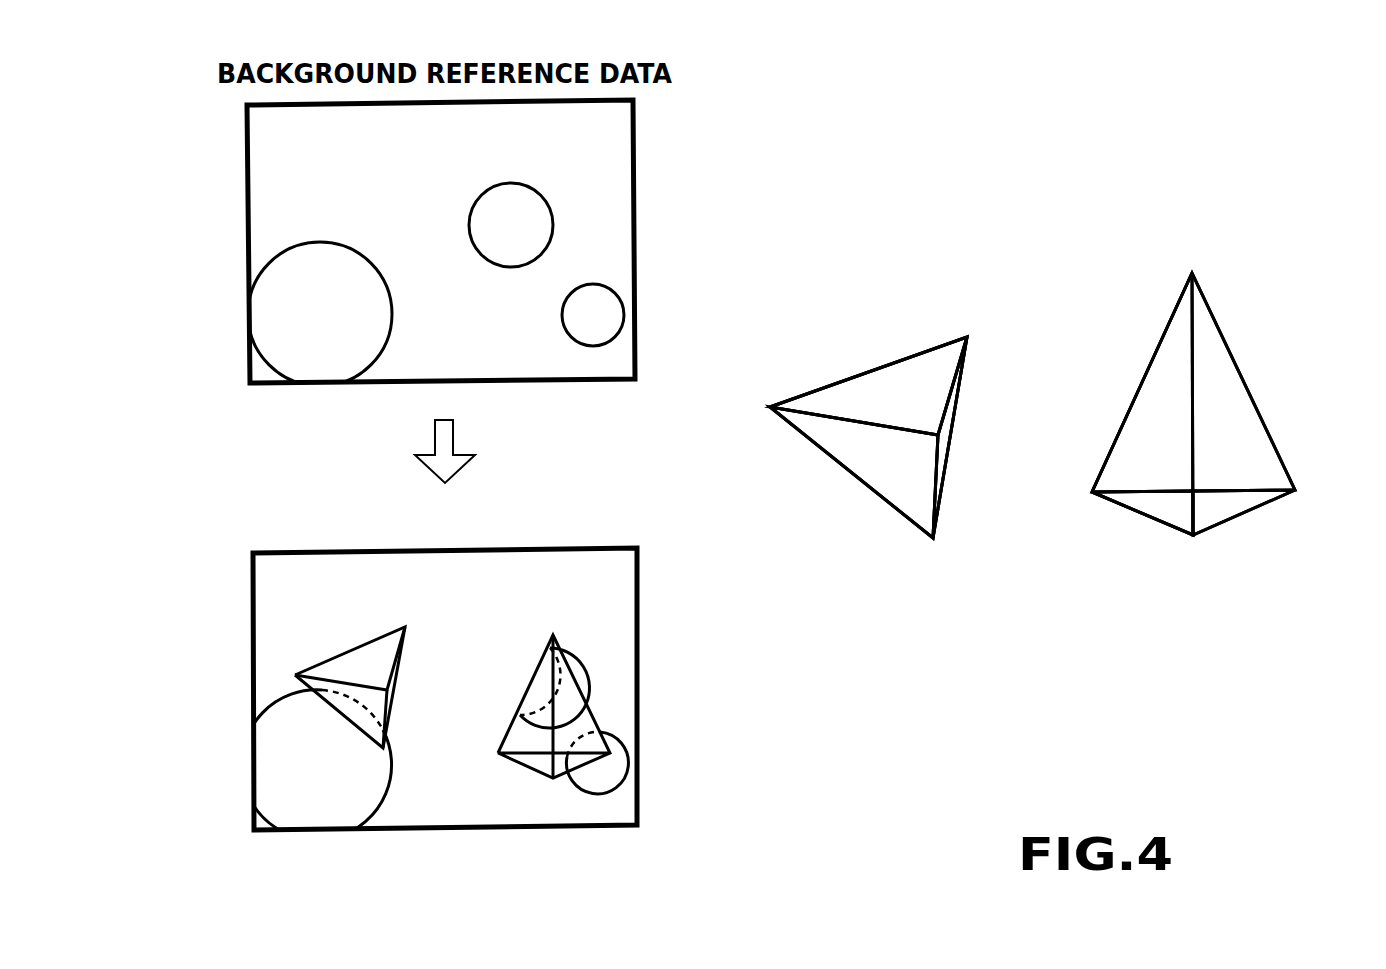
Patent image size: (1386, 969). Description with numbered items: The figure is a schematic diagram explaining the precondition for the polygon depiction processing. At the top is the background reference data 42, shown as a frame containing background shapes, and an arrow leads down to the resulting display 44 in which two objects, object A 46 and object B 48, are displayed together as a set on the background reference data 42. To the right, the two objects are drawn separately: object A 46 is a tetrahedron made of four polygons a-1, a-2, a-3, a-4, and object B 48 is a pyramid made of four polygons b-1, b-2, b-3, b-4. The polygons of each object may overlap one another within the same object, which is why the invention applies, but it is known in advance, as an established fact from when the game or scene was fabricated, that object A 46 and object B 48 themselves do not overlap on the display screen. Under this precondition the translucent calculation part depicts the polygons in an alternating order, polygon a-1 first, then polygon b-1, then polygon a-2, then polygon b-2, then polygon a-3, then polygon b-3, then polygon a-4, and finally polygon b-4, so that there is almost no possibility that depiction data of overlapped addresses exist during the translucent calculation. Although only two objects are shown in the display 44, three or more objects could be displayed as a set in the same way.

The background reference data 42 is at (633, 147).
The display with the objects as a set 44 is at (565, 550).
The object A 46 is at (352, 663).
The object B 48 is at (873, 705).
The polygon a-1 is at (855, 373).
The polygon a-2 is at (952, 430).
The polygon a-3 is at (922, 387).
The polygon a-4 is at (898, 465).
The polygon b-1 is at (1245, 382).
The polygon b-2 is at (1163, 527).
The polygon b-3 is at (1147, 500).
The polygon b-4 is at (1247, 502).